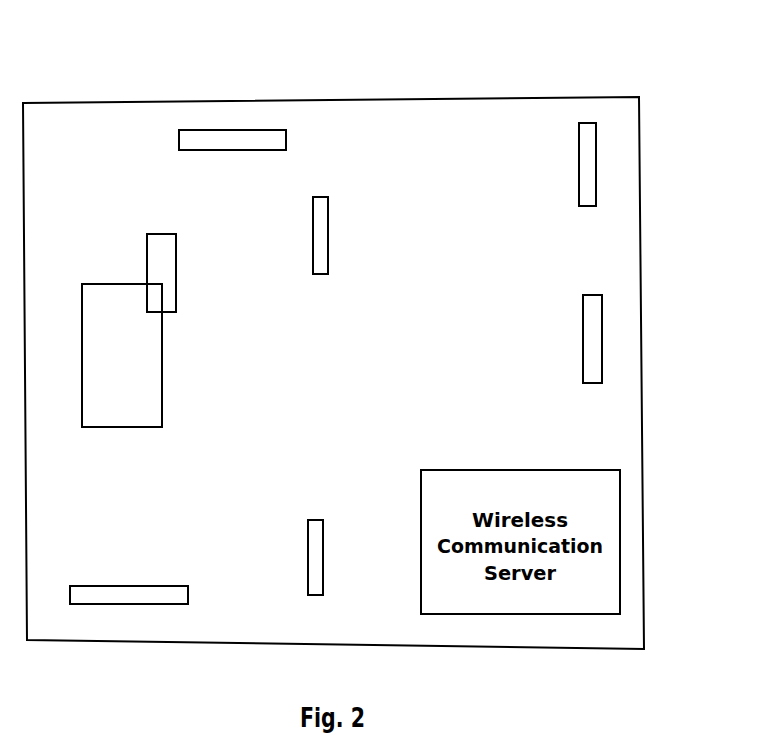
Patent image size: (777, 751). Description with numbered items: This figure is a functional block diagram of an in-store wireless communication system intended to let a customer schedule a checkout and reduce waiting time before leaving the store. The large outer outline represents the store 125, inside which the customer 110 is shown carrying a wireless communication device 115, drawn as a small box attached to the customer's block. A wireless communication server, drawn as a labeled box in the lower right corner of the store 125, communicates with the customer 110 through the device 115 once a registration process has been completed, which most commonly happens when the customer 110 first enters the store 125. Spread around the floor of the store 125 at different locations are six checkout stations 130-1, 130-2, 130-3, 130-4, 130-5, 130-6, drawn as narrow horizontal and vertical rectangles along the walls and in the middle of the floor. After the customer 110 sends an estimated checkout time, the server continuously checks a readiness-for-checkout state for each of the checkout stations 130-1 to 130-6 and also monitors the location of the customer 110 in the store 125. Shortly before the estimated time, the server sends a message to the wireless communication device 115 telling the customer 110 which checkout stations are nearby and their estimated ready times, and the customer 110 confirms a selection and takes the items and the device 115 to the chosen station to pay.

The store 125 is at (441, 128).
The customer 110 is at (132, 368).
The wireless communication device 115 is at (157, 258).
The checkout station 130-1 is at (258, 127).
The checkout station 130-2 is at (322, 212).
The checkout station 130-3 is at (315, 540).
The checkout station 130-4 is at (138, 594).
The checkout station 130-5 is at (588, 163).
The checkout station 130-6 is at (596, 331).